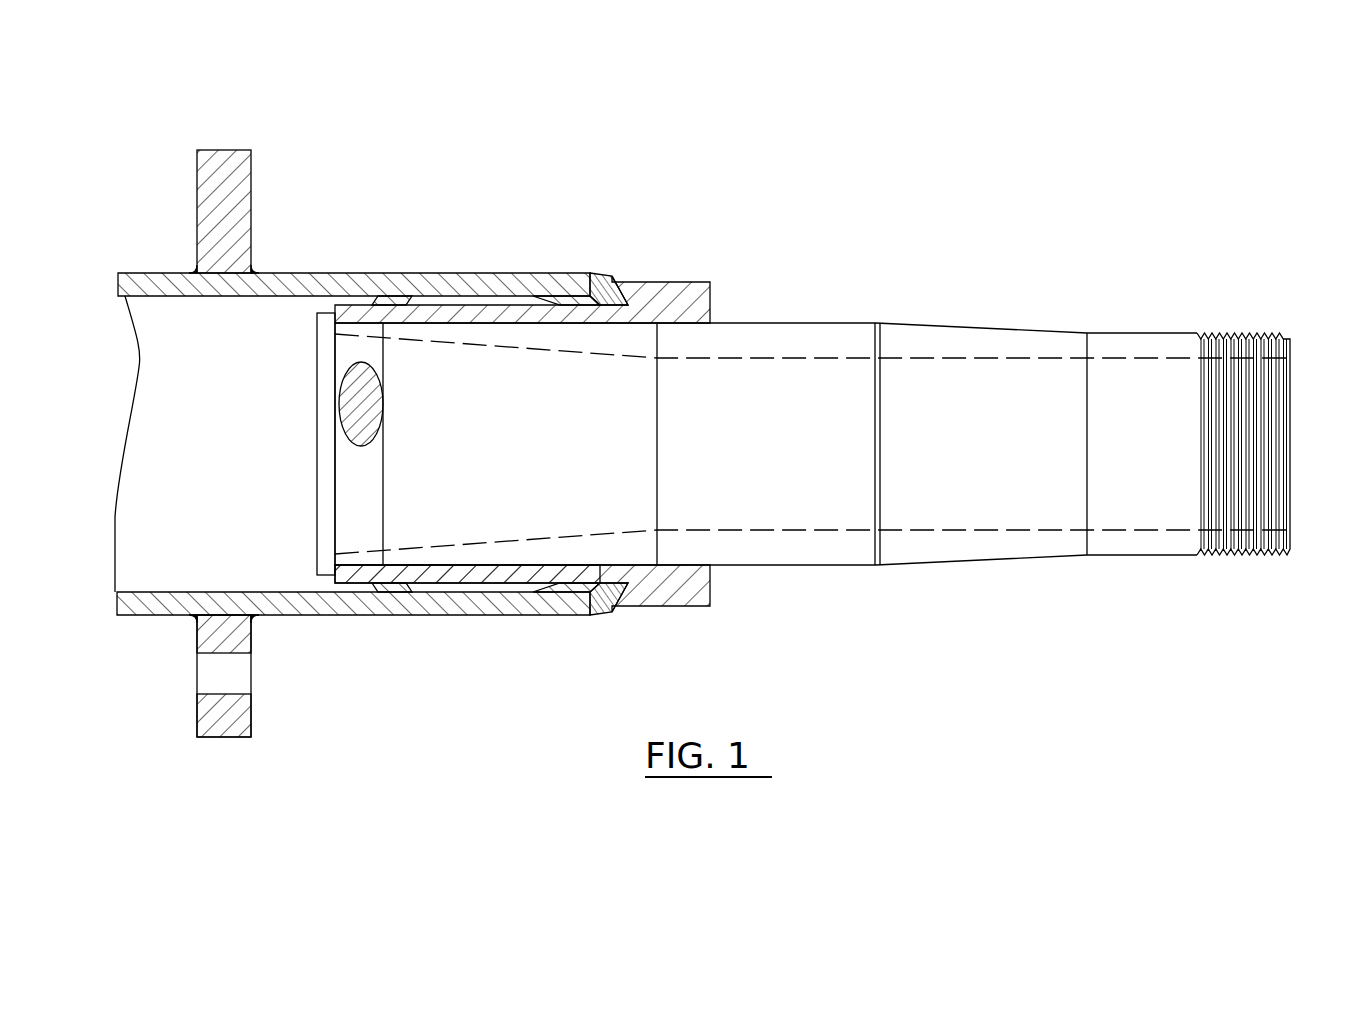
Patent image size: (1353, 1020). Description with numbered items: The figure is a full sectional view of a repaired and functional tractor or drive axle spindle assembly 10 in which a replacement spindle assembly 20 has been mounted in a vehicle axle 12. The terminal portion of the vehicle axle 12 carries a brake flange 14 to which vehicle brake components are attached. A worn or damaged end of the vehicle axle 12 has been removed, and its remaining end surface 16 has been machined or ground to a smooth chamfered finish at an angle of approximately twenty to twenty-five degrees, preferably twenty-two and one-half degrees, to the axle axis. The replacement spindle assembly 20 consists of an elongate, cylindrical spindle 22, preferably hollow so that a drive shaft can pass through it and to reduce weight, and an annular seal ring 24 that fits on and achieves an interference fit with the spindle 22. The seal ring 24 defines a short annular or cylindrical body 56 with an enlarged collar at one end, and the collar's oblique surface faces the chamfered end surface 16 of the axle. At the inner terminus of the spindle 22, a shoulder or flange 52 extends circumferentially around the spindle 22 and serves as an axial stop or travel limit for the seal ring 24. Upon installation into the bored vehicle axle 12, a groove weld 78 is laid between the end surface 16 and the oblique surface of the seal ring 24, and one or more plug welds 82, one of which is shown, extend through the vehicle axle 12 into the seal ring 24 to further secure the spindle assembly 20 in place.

The drive axle spindle assembly 10 is at (899, 159).
The vehicle axle 12 is at (365, 290).
The brake flange 14 is at (222, 166).
The end surface 16 is at (607, 284).
The replacement spindle assembly 20 is at (853, 286).
The spindle 22 is at (1059, 326).
The seal ring 24 is at (722, 300).
The shoulder or flange 52 is at (316, 513).
The annular or cylindrical body 56 is at (525, 572).
The groove weld 78 is at (600, 598).
The plug weld 82 is at (355, 392).